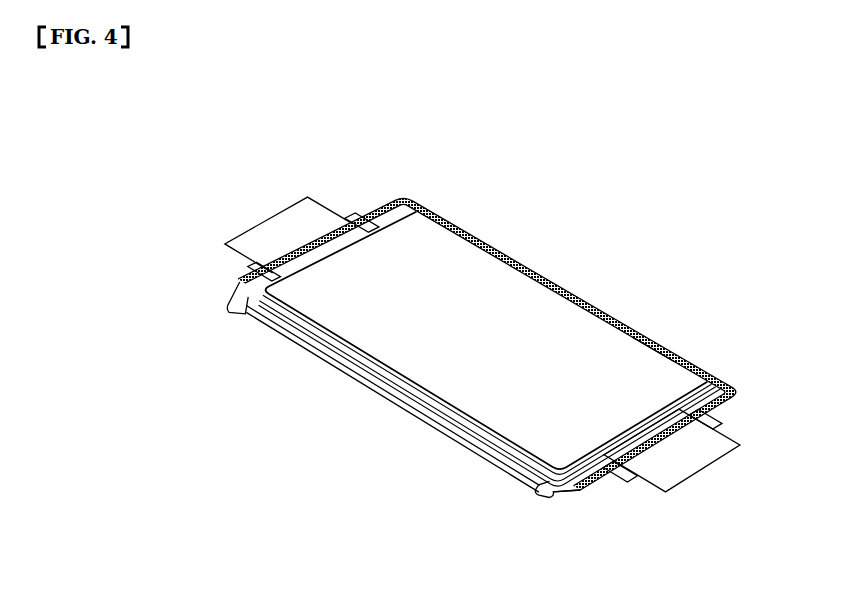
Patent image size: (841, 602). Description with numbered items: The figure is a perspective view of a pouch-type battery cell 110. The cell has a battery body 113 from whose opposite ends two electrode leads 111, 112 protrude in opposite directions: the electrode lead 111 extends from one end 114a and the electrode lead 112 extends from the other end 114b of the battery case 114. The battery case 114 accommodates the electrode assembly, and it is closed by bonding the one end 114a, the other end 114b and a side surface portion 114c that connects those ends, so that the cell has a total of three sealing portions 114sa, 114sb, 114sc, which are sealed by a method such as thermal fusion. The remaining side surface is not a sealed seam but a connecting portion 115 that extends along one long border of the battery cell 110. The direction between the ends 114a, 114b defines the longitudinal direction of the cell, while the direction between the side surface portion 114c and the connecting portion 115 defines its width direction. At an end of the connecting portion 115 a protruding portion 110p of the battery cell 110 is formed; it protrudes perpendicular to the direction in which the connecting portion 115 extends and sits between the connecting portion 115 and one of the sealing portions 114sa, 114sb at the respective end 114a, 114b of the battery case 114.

The battery cell 110 is at (187, 101).
The protruding portion 110p is at (233, 300).
The electrode lead 111 is at (283, 228).
The electrode lead 112 is at (708, 467).
The battery body 113 is at (490, 280).
The battery case 114 is at (738, 379).
The one end 114a is at (388, 209).
The other end 114b is at (582, 492).
The side surface portion 114c is at (578, 296).
The sealing portion 114sa is at (352, 210).
The sealing portion 114sb is at (733, 418).
The sealing portion 114sc is at (658, 345).
The connecting portion 115 is at (420, 401).